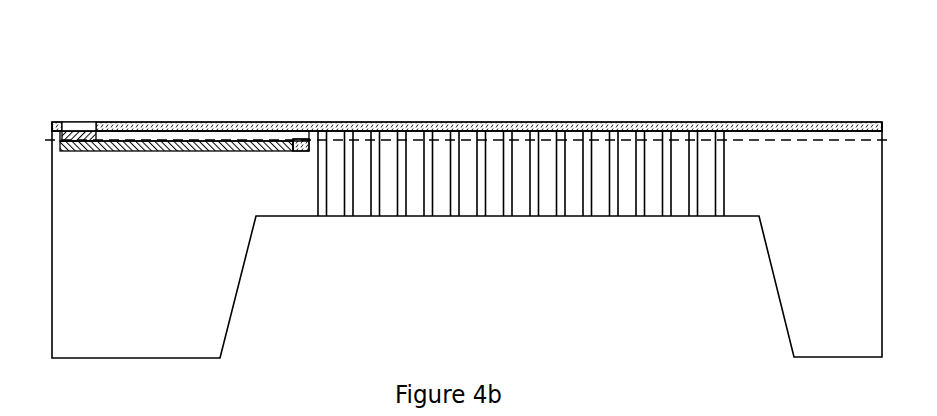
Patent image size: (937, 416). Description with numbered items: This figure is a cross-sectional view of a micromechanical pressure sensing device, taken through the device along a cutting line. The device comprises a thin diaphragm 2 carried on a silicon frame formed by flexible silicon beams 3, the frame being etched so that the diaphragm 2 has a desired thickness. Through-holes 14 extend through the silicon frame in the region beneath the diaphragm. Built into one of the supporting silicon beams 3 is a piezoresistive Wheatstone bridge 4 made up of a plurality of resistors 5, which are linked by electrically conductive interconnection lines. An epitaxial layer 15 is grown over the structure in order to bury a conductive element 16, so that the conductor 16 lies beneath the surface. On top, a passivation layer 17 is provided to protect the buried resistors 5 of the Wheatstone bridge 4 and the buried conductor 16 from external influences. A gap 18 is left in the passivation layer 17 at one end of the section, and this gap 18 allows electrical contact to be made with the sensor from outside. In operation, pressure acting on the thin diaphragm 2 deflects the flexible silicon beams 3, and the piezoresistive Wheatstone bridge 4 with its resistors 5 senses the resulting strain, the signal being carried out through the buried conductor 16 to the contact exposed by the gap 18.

The thin diaphragm 2 is at (653, 138).
The flexible silicon beam 3 is at (217, 231).
The piezoresistive Wheatstone bridge 4 is at (305, 142).
The resistor 5 is at (305, 142).
The through-hole 14 is at (478, 216).
The epitaxial layer 15 is at (173, 135).
The conductive element 16 is at (68, 128).
The passivation layer 17 is at (242, 127).
The gap 18 is at (85, 128).